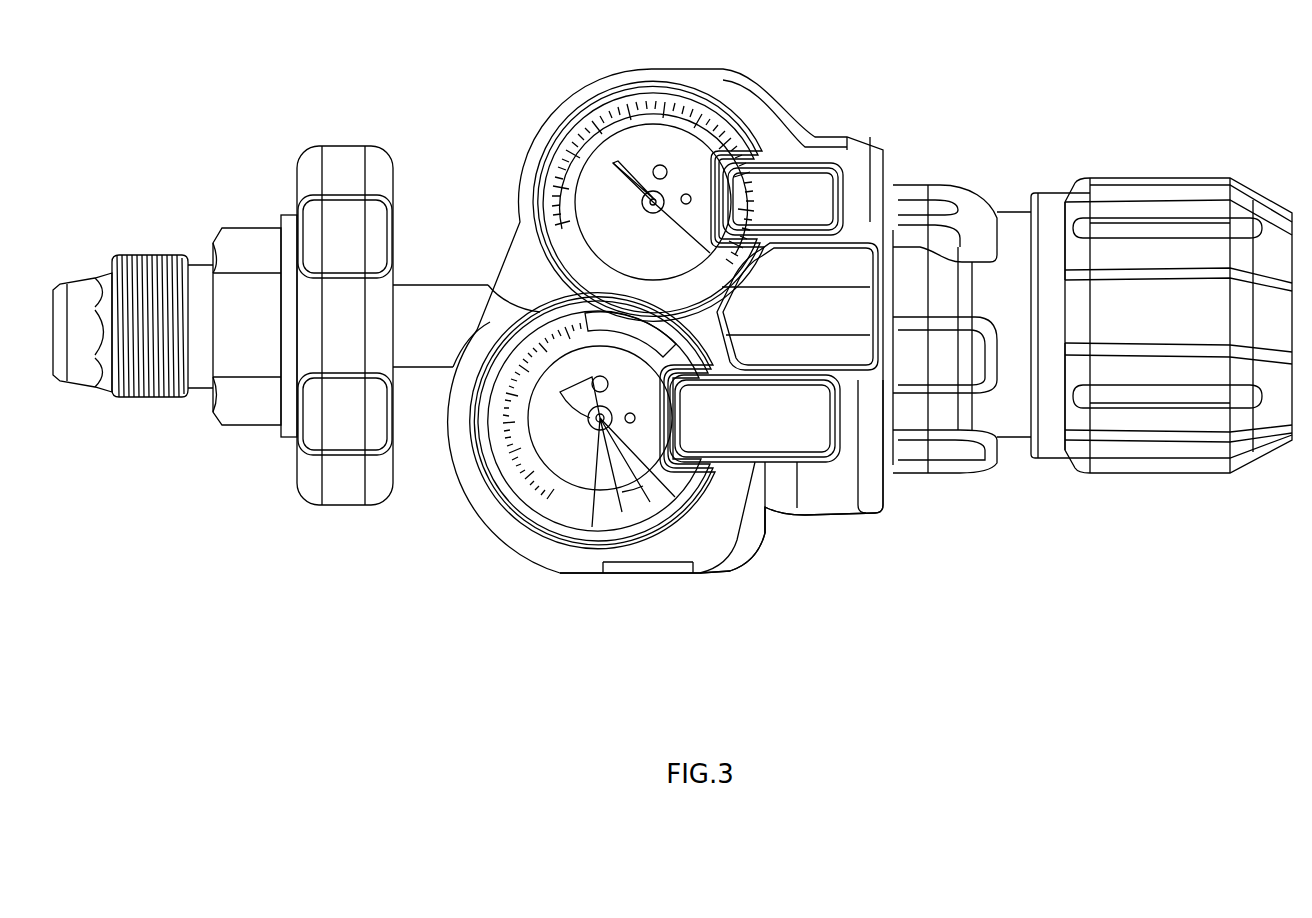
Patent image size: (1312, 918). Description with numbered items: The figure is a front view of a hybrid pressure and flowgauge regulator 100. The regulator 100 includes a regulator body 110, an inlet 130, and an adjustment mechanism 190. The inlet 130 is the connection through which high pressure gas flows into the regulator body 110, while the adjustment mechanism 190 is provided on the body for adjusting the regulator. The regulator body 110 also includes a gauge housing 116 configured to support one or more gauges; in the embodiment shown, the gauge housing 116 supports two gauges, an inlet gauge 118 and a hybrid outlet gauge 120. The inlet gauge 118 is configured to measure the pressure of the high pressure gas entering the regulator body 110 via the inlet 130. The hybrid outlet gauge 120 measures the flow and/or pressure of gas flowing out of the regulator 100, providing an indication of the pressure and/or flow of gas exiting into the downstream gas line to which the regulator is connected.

The hybrid pressure and flowgauge regulator 100 is at (903, 57).
The regulator body 110 is at (943, 193).
The gauge housing 116 is at (765, 509).
The inlet gauge 118 is at (612, 108).
The hybrid outlet gauge 120 is at (568, 450).
The inlet 130 is at (241, 247).
The adjustment mechanism 190 is at (1150, 192).